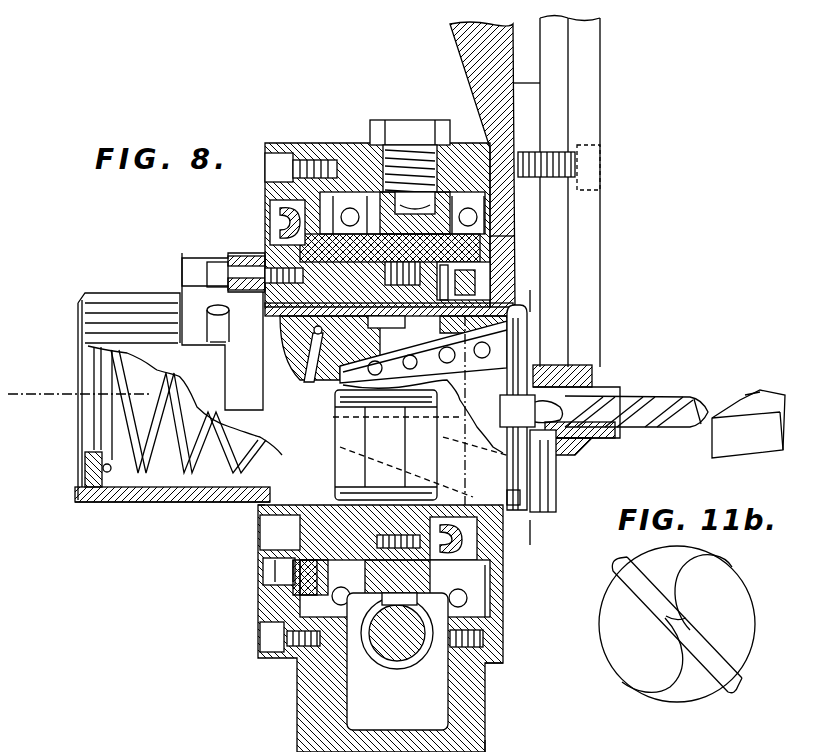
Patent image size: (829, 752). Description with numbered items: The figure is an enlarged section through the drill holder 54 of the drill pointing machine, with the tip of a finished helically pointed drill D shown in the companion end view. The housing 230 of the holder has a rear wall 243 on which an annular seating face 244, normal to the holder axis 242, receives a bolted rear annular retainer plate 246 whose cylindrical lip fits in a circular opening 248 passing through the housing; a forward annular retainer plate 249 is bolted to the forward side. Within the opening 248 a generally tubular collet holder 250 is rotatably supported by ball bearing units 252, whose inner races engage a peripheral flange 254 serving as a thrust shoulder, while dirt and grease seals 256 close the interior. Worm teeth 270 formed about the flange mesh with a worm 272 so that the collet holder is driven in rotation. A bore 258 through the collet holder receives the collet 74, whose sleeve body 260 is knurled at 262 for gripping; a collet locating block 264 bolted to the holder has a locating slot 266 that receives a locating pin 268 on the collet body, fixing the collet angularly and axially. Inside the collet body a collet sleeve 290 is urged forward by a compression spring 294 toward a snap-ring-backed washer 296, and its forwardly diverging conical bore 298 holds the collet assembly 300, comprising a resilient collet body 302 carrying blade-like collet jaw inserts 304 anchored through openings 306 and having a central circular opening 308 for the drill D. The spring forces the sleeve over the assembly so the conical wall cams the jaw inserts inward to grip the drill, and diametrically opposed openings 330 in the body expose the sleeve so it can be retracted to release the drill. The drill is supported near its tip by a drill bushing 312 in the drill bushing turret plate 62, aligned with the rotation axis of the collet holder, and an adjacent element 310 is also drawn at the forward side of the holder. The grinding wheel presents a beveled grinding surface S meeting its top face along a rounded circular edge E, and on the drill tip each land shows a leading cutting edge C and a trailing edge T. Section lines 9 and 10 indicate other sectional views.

In FIG. 8, the drill bushing turret plate 62 is at (598, 46).
In FIG. 8, the collet 74 is at (115, 286).
In FIG. 8, the axis 242 is at (42, 397).
In FIG. 8, the rear wall 243 is at (297, 703).
In FIG. 8, the annular seating face 244 is at (293, 150).
In FIG. 8, the rear annular retainer plate 246 is at (258, 602).
In FIG. 8, the circular opening 248 is at (258, 623).
In FIG. 8, the forward annular retainer plate 249 is at (508, 240).
In FIG. 8, the collet holder 250 is at (372, 541).
In FIG. 8, the ball bearing units 252 is at (350, 208).
In FIG. 8, the peripheral flange 254 is at (393, 240).
In FIG. 8, the dirt and grease seals 256 is at (290, 228).
In FIG. 8, the bore 258 is at (255, 503).
In FIG. 8, the sleeve body 260 is at (190, 503).
In FIG. 8, the knurled portion 262 is at (145, 503).
In FIG. 8, the collet locating block 264 is at (185, 263).
In FIG. 8, the locating slot 266 is at (210, 342).
In FIG. 8, the locating pin 268 is at (222, 340).
In FIG. 8, the worm teeth 270 is at (425, 198).
In FIG. 8, the worm 272 is at (404, 652).
In FIG. 8, the collet sleeve 290 is at (372, 333).
In FIG. 8, the compression spring 294 is at (150, 470).
In FIG. 8, the snap-ring-backed washer 296 is at (512, 350).
In FIG. 8, the conical bore 298 is at (415, 355).
In FIG. 8, the collet assembly 300 is at (508, 362).
In FIG. 8, the resilient collet body 302 is at (480, 368).
In FIG. 8, the collet jaw inserts 304 is at (350, 367).
In FIG. 8, the openings 306 is at (447, 362).
In FIG. 8, the circular opening 308 is at (503, 398).
In FIG. 8, the stop 310 is at (548, 490).
In FIG. 8, the drill bushings 312 is at (606, 387).
In FIG. 8, the openings 330 is at (338, 467).
In FIG. 8, the drill holder 54 is at (492, 703).
In FIG. 8, the housing 230 is at (492, 745).
In FIG. 8, the section line 10 is at (472, 297).
In FIG. 8, the section line 9 is at (532, 297).
In FIG. 8, the drill D is at (676, 395).
In FIG. 11b, the drill D is at (597, 626).
In FIG. 8, the grinding surface S is at (728, 404).
In FIG. 8, the circular edge E is at (745, 395).
In FIG. 11b, the cutting edge C is at (633, 598).
In FIG. 11b, the trailing edge T is at (683, 579).